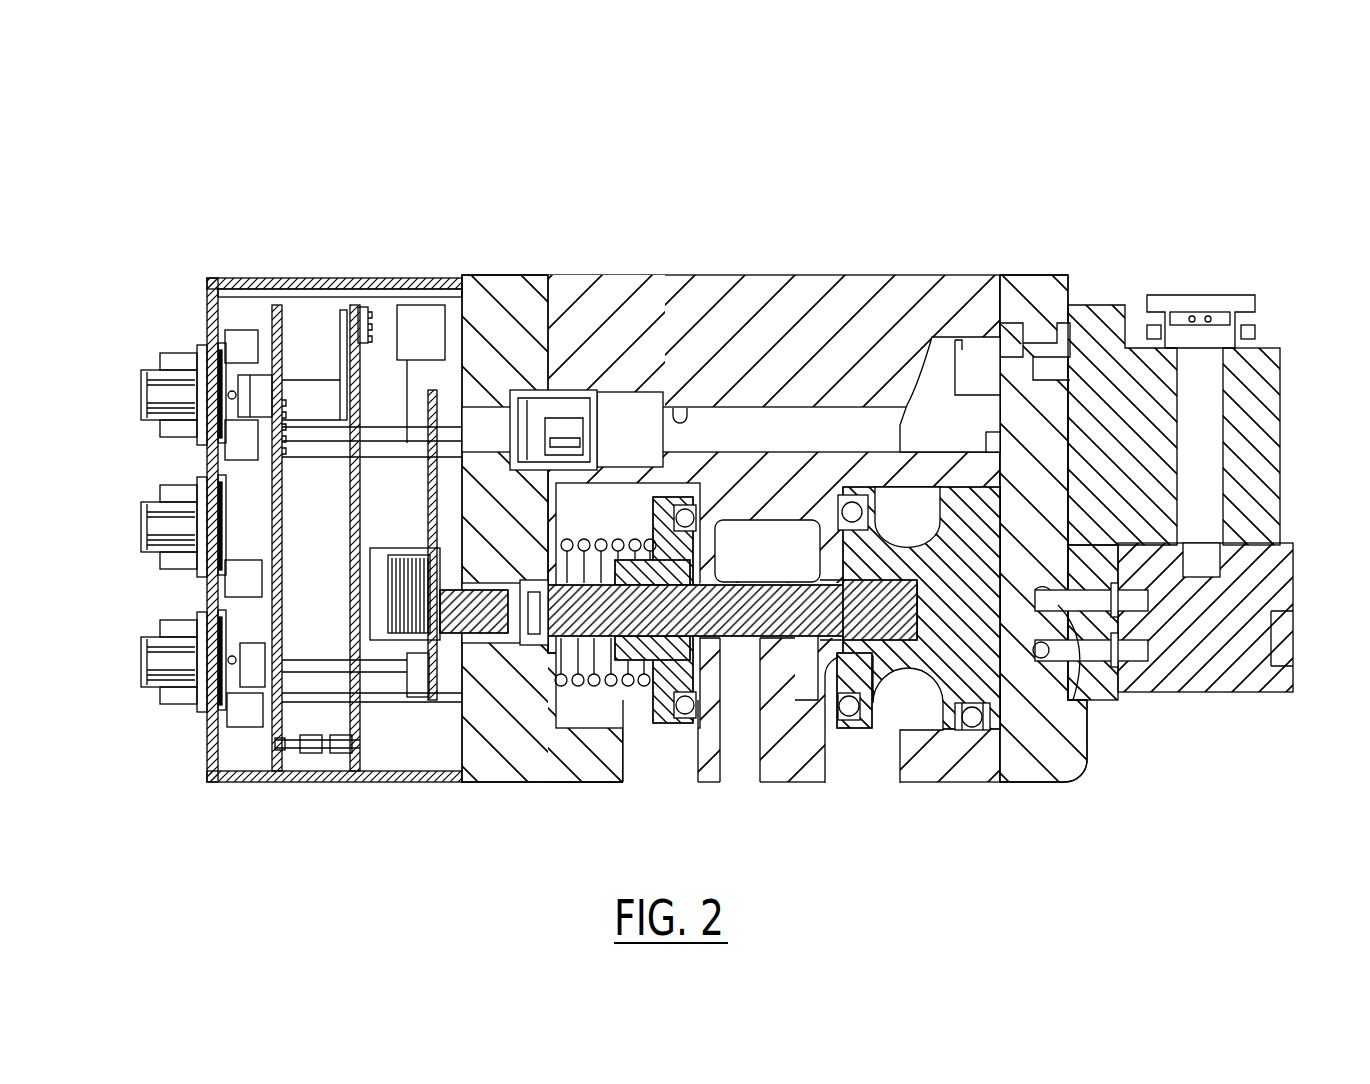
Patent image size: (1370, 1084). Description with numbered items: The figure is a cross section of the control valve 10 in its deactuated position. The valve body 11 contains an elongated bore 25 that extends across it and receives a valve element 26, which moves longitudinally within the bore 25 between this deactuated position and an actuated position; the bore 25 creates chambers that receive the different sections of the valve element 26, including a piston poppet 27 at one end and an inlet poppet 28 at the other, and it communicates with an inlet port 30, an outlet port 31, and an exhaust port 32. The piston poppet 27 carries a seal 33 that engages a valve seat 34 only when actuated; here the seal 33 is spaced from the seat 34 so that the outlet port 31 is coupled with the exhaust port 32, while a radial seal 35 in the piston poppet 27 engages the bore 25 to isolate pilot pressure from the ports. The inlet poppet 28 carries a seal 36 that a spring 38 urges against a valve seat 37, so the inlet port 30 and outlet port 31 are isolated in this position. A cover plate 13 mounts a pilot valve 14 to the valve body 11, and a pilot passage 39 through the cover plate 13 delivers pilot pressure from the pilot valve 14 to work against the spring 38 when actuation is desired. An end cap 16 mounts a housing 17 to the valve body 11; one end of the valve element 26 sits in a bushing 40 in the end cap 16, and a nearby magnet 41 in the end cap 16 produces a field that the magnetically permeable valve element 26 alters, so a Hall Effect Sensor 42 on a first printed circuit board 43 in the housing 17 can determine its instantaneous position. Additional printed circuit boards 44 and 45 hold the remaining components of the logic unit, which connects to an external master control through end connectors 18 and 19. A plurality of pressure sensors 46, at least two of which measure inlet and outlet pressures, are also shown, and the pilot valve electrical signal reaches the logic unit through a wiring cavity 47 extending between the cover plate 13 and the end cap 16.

The valve system 10 is at (679, 140).
The valve body 11 is at (766, 275).
The cover plate 13 is at (1024, 275).
The pilot valve 14 is at (1308, 568).
The end cap 16 is at (496, 290).
The housing 17 is at (327, 277).
The end connector 18 is at (153, 370).
The end connector 19 is at (140, 520).
The elongated bore 25 is at (764, 520).
The valve element 26 is at (776, 636).
The piston poppet 27 is at (907, 517).
The inlet poppet 28 is at (652, 515).
The inlet port 30 is at (657, 770).
The outlet port 31 is at (755, 770).
The exhaust port 32 is at (862, 770).
The seal 33 is at (852, 500).
The valve seat 34 is at (832, 500).
The radial seal 35 is at (973, 760).
The seal 36 is at (684, 507).
The valve seat 37 is at (704, 498).
The spring 38 is at (630, 681).
The pilot passage 39 is at (1080, 676).
The bushing 40 is at (546, 645).
The magnet 41 is at (485, 636).
The Hall Effect Sensor 42 is at (450, 535).
The armature plate 43 is at (448, 700).
The printed circuit board 44 is at (354, 775).
The printed circuit board 45 is at (268, 775).
The pressure sensor 46 is at (412, 297).
The wiring cavity 47 is at (684, 405).